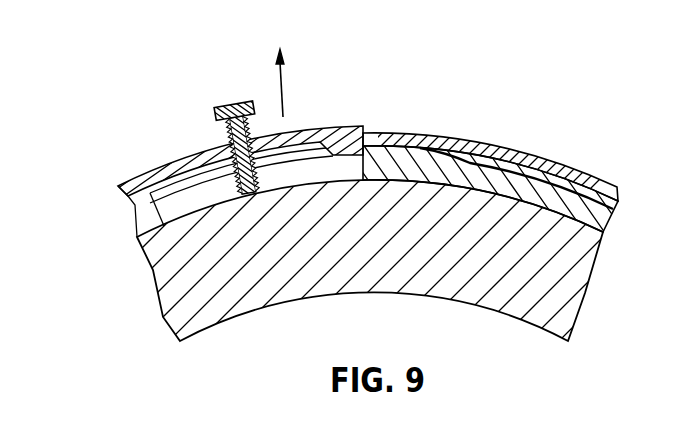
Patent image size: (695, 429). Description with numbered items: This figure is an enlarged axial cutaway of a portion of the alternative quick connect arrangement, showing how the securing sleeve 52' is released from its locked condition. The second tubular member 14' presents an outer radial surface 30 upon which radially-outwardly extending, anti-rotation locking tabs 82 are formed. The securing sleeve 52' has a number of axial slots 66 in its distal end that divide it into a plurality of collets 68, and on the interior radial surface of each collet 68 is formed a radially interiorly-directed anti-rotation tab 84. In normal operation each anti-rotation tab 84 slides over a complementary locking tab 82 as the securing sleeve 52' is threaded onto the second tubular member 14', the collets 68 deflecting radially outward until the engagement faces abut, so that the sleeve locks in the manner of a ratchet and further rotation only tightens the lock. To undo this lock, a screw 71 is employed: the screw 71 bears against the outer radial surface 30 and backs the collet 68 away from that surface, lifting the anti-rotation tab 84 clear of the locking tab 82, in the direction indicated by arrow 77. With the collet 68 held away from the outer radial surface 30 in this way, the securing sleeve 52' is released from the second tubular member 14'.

The second tubular member 14' is at (347, 233).
The outer radial surface 30 is at (118, 184).
The securing sleeve 52' is at (477, 130).
The axial slots 66 is at (229, 133).
The collet 68 is at (510, 147).
The screw 71 is at (229, 101).
The arrow 77 is at (284, 84).
The locking tab 82 is at (381, 160).
The anti-rotation tab 84 is at (348, 142).